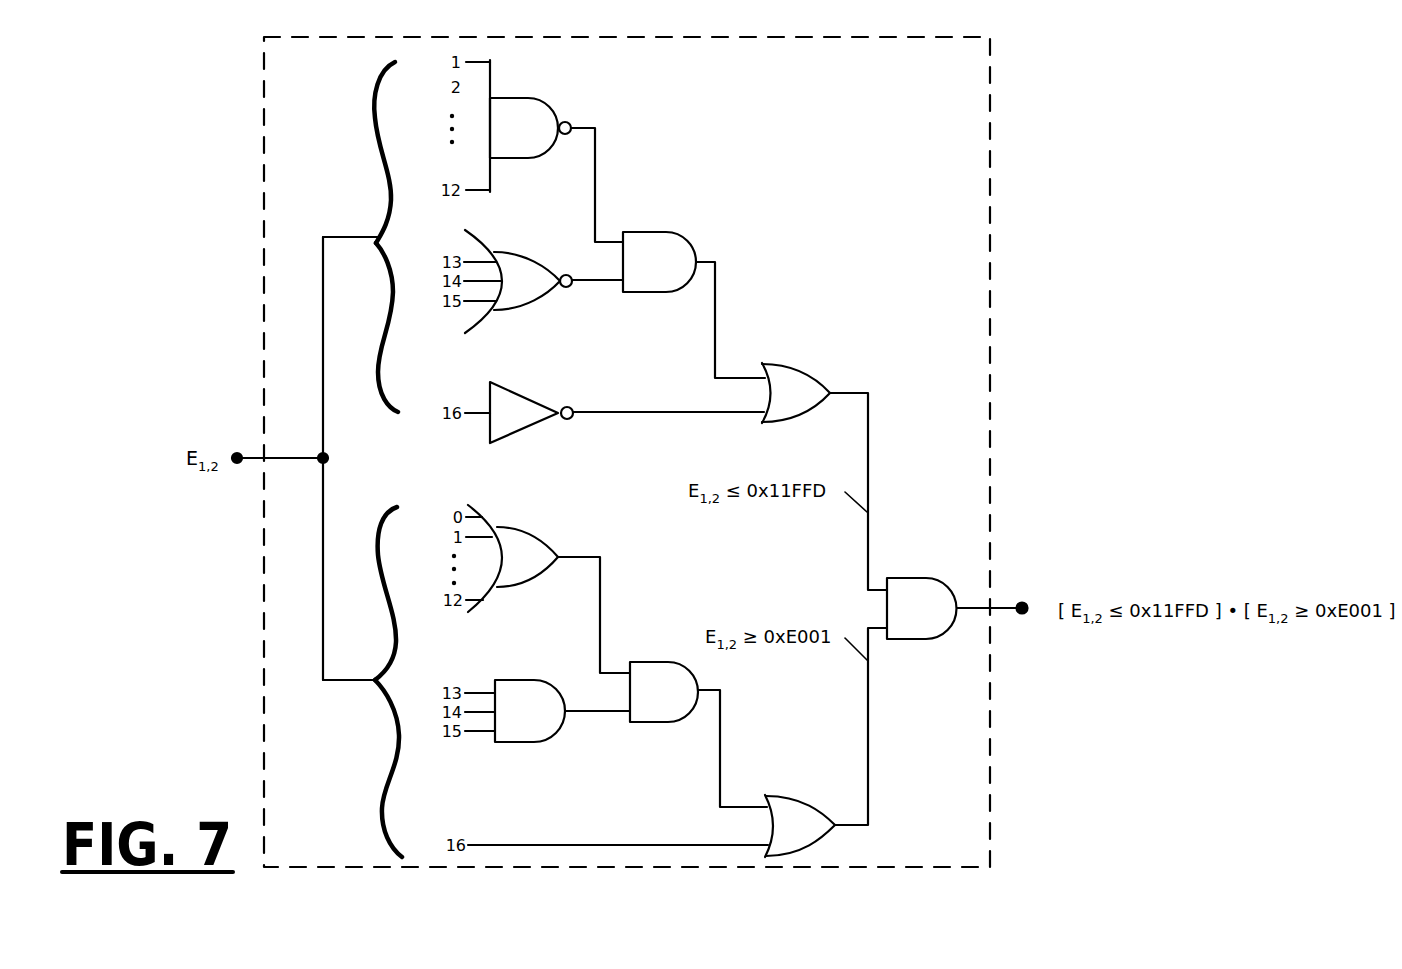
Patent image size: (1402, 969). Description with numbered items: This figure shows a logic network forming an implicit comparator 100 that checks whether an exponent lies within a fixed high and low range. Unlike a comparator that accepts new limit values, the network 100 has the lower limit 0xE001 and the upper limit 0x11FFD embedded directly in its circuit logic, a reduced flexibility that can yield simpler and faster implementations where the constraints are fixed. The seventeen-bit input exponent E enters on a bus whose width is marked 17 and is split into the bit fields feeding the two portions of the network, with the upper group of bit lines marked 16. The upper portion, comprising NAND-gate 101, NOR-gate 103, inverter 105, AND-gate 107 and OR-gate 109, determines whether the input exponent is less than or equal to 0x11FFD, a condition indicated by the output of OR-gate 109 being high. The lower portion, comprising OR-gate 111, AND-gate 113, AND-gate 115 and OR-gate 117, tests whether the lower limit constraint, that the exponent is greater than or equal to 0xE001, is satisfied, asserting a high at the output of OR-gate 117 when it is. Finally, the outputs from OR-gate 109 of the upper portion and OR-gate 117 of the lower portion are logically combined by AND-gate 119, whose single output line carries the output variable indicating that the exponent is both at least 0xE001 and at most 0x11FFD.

The implicit comparator 100 is at (949, 76).
The NAND-gate 101 is at (544, 151).
The NOR-gate 103 is at (543, 281).
The inverter 105 is at (614, 412).
The AND-gate 107 is at (694, 305).
The OR-gate 109 is at (857, 378).
The OR-gate 111 is at (548, 589).
The AND-gate 113 is at (547, 711).
The AND-gate 115 is at (698, 734).
The OR-gate 117 is at (862, 818).
The AND-gate 119 is at (977, 598).
The 16-bit bus 16 is at (340, 244).
The 17-bit input bus E1,2 17 is at (277, 467).